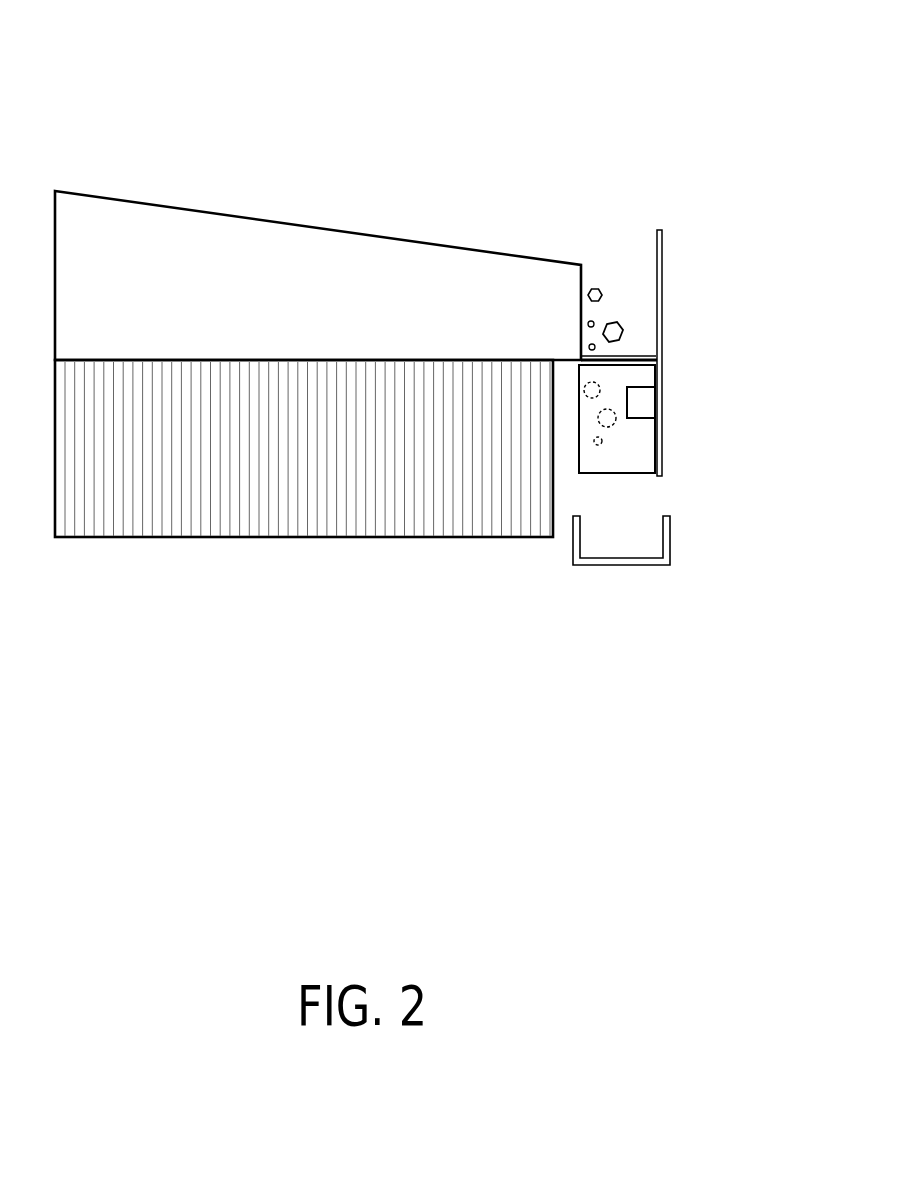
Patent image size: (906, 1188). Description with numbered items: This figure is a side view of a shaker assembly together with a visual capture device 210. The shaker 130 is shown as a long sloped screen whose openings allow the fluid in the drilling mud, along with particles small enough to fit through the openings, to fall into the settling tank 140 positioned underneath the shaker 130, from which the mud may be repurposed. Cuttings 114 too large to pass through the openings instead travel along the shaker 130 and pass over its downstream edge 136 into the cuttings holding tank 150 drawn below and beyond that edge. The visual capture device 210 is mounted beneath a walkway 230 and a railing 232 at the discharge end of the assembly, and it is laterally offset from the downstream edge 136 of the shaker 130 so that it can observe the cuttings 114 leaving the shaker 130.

The shaker 130 is at (115, 90).
The settling tank 140 is at (402, 458).
The downstream edge 136 is at (596, 287).
The cuttings 114 is at (617, 321).
The railing 232 is at (662, 232).
The walkway 230 is at (647, 357).
The visual capture device 210 is at (645, 405).
The cuttings holding tank 150 is at (615, 565).